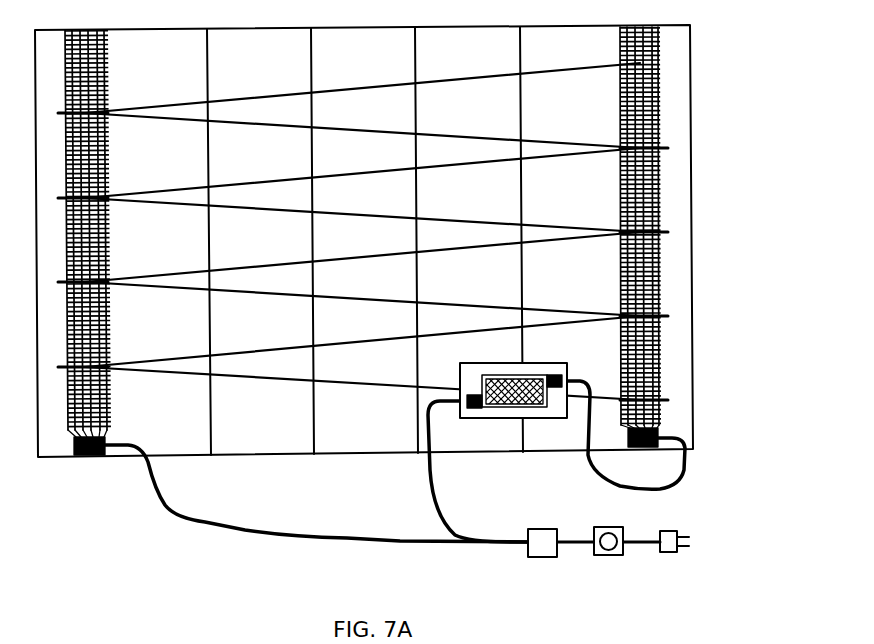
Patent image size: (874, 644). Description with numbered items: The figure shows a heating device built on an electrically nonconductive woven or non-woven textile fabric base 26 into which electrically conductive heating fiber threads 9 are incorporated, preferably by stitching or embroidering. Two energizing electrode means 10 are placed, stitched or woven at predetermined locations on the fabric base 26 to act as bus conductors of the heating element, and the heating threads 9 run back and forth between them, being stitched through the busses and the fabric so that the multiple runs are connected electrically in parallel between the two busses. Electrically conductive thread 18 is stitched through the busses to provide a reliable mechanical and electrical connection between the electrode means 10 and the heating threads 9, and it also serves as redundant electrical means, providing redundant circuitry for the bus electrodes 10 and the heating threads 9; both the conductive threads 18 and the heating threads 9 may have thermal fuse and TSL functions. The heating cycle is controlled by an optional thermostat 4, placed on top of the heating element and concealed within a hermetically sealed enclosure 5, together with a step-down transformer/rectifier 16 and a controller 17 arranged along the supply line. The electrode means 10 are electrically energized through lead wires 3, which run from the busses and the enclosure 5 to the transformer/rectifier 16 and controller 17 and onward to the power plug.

The textile fabric base 26 is at (578, 48).
The electrically conductive thread 18 is at (522, 122).
The heating fiber threads 9 is at (542, 225).
The electrode means 10 is at (88, 458).
The lead wires 3 is at (323, 540).
The hermetically sealed enclosure 5 is at (543, 363).
The thermostat 4 is at (503, 407).
The step-down transformer/rectifier 16 is at (543, 557).
The controller 17 is at (593, 549).